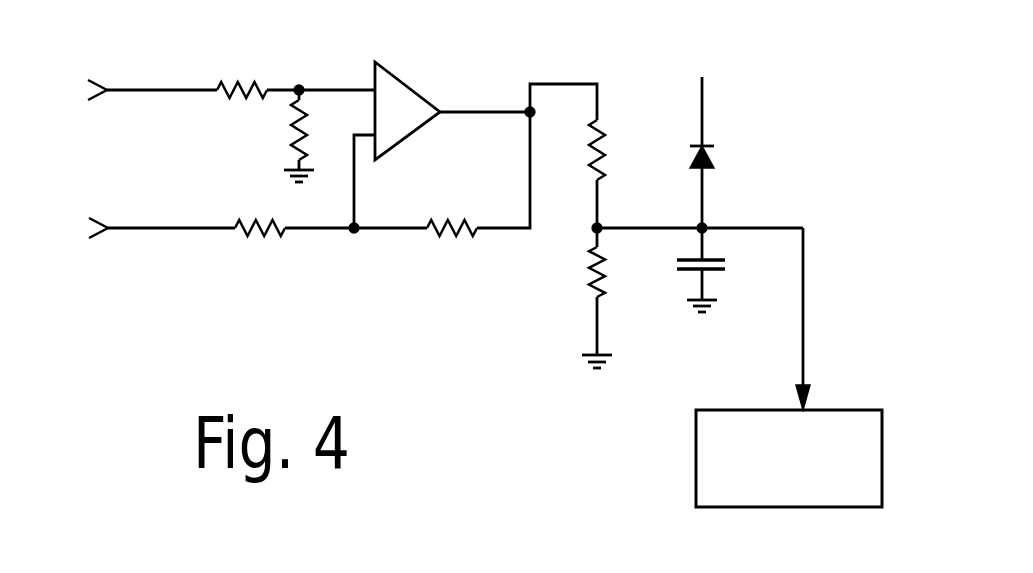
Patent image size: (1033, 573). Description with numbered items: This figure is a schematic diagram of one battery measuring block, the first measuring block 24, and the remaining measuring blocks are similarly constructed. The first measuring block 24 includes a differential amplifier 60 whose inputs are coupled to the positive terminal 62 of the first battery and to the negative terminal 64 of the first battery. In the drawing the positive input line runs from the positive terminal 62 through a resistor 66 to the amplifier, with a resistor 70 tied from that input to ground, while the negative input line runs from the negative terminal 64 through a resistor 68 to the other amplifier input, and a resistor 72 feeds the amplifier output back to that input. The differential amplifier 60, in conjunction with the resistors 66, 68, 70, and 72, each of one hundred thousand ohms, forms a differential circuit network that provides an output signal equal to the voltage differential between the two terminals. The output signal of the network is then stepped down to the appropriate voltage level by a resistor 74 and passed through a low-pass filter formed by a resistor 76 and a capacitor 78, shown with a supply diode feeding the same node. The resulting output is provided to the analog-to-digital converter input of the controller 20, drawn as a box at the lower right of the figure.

The controller 20 is at (697, 462).
The first measuring block 24 is at (766, 72).
The differential amplifier 60 is at (413, 90).
The positive terminal 62 is at (88, 75).
The negative terminal 64 is at (87, 247).
The resistor 66 is at (250, 80).
The resistor 68 is at (250, 215).
The resistor 70 is at (287, 135).
The resistor 72 is at (465, 250).
The resistor 74 is at (617, 145).
The resistor 76 is at (585, 293).
The capacitor 78 is at (722, 277).